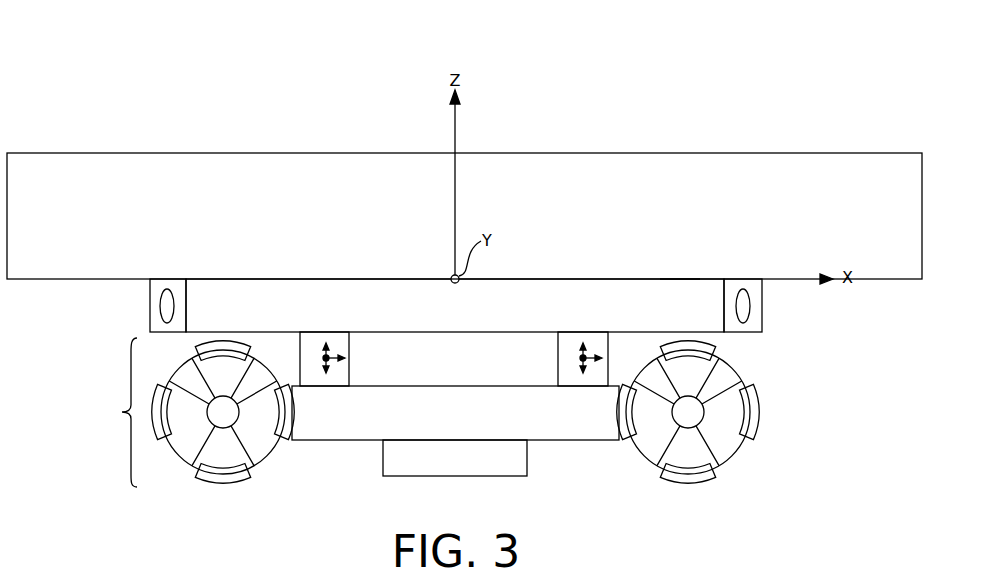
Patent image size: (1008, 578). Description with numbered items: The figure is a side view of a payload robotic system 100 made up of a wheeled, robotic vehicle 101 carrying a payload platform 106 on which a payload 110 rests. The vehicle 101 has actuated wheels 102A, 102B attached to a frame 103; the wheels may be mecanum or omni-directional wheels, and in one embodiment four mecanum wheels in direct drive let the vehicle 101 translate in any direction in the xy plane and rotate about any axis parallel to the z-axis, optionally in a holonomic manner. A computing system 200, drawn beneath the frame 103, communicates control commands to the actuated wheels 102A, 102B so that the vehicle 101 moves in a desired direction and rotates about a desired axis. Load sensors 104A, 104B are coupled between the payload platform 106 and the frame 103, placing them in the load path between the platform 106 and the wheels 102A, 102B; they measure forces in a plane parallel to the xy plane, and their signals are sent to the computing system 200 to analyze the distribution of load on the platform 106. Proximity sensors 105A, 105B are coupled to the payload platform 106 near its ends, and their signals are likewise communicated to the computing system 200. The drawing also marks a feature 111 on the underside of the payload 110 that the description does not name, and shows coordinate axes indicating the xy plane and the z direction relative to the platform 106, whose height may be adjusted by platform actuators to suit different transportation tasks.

The payload robotic system 100 is at (168, 52).
The payload 110 is at (58, 184).
The bottom surface of vehicle body 111 is at (678, 279).
The proximity sensor 105A is at (160, 304).
The proximity sensor 105B is at (750, 306).
The payload platform 106 is at (440, 316).
The wheeled, robotic vehicle 101 is at (121, 412).
The load sensor 104A is at (350, 357).
The load sensor 104B is at (558, 357).
The frame 103 is at (440, 426).
The actuated wheel 102A is at (277, 455).
The actuated wheel 102B is at (633, 455).
The computing system 200 is at (440, 470).